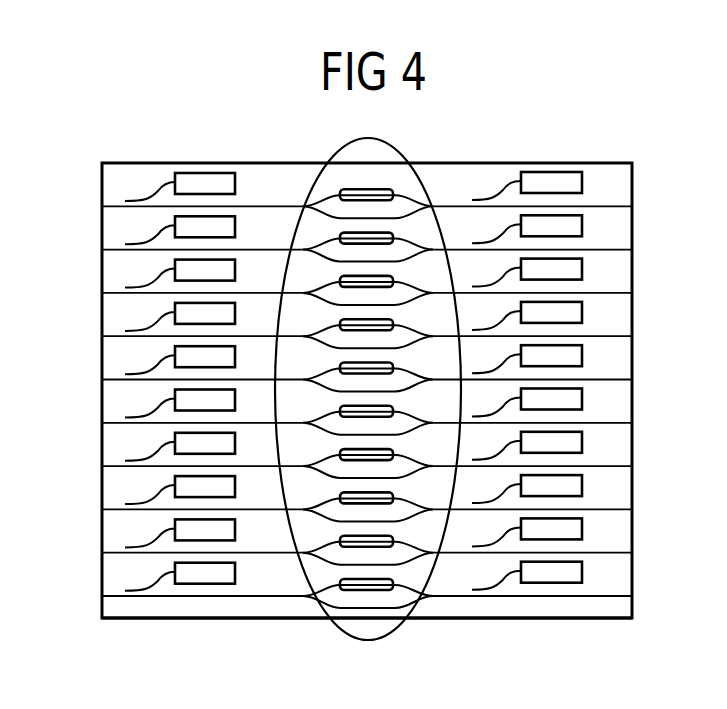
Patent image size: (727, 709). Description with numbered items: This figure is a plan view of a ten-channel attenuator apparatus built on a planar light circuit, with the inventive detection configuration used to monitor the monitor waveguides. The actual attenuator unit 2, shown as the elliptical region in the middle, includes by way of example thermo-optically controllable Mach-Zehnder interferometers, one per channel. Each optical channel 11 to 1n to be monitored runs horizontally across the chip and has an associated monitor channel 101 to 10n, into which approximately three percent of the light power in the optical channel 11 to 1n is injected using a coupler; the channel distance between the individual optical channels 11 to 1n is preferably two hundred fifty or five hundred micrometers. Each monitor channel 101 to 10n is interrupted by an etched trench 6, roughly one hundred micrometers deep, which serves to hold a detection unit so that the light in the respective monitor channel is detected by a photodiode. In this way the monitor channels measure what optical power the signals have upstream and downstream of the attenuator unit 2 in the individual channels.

The monitor channel 101 is at (160, 182).
The trench 6 is at (202, 182).
The optical channel 11 is at (110, 207).
The monitor channel 10n is at (142, 580).
The optical channel 1n is at (108, 597).
The attenuator unit 2 is at (390, 147).